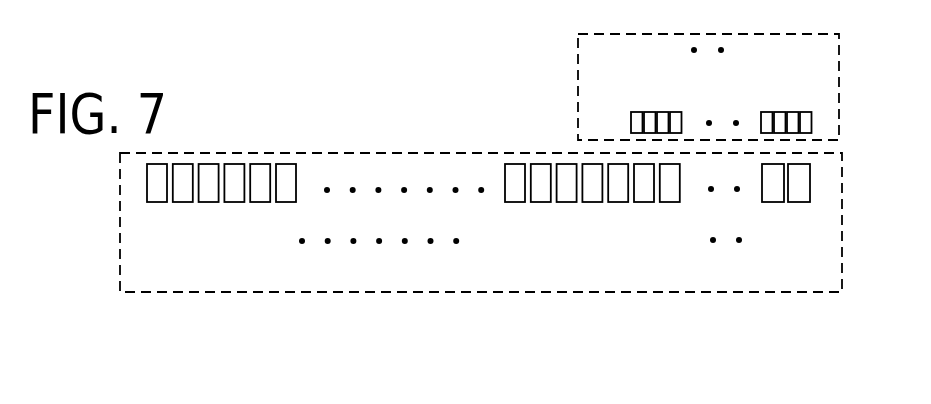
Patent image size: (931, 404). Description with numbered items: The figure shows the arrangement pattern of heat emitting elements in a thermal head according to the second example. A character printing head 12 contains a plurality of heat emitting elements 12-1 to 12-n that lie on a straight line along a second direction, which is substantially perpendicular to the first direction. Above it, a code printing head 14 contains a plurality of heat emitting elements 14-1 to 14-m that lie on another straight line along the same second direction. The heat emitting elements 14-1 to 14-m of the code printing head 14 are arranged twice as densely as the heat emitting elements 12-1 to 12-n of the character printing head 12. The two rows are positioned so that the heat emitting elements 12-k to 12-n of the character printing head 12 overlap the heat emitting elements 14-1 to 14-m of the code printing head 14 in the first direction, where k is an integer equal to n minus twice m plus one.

The code printing head 14 is at (560, 70).
The heat emitting element 14-1 is at (634, 112).
The heat emitting element 14-m is at (803, 112).
The character printing head 12 is at (481, 241).
The heat emitting element 12-1 is at (158, 203).
The heat emitting element 12-k is at (645, 203).
The heat emitting element 12-n is at (797, 203).